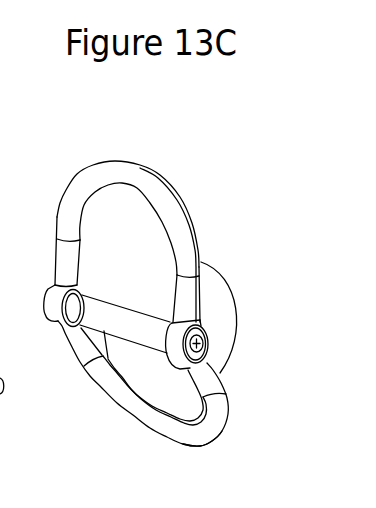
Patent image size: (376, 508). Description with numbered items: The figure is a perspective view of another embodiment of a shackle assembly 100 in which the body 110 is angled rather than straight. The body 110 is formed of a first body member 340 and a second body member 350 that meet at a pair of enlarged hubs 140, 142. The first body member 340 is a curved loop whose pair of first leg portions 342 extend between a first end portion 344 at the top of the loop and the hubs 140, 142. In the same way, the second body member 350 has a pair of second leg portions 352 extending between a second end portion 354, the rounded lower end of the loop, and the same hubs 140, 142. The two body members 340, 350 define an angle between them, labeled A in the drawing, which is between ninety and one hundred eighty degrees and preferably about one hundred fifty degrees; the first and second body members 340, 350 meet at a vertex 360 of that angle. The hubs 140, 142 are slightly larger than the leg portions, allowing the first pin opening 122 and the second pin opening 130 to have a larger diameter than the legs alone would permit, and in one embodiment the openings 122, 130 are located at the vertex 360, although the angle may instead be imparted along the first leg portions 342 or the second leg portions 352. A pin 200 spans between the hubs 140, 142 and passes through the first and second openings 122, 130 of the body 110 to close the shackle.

The carabiner assembly 100 is at (160, 128).
The body 110 is at (58, 178).
The first pin opening 122 is at (37, 303).
The second pin opening 130 is at (167, 320).
The hub 140 is at (53, 310).
The hub 142 is at (168, 355).
The pin 200 is at (134, 327).
The first body member 340 is at (182, 198).
The first leg portions 342 is at (60, 250).
The first end portion 344 is at (112, 169).
The second body member 350 is at (232, 407).
The second leg portions 352 is at (80, 346).
The second end portion 354 is at (198, 430).
The vertex 360 is at (195, 352).